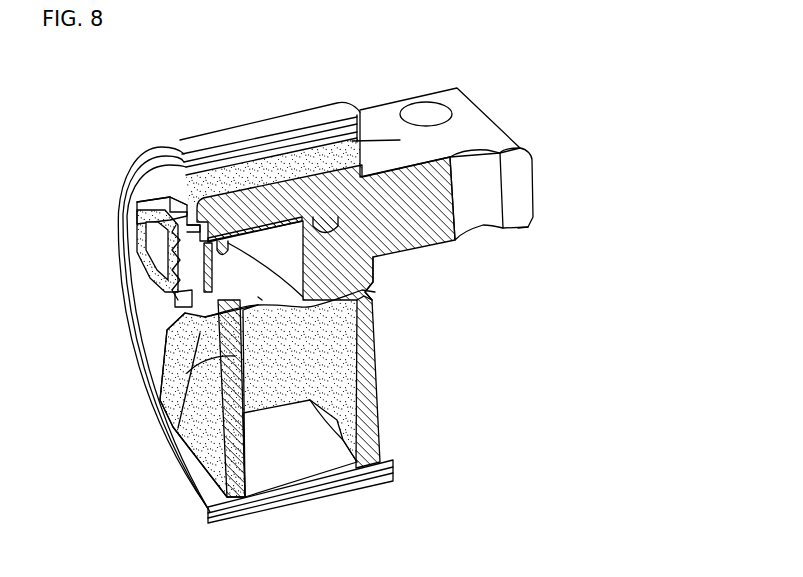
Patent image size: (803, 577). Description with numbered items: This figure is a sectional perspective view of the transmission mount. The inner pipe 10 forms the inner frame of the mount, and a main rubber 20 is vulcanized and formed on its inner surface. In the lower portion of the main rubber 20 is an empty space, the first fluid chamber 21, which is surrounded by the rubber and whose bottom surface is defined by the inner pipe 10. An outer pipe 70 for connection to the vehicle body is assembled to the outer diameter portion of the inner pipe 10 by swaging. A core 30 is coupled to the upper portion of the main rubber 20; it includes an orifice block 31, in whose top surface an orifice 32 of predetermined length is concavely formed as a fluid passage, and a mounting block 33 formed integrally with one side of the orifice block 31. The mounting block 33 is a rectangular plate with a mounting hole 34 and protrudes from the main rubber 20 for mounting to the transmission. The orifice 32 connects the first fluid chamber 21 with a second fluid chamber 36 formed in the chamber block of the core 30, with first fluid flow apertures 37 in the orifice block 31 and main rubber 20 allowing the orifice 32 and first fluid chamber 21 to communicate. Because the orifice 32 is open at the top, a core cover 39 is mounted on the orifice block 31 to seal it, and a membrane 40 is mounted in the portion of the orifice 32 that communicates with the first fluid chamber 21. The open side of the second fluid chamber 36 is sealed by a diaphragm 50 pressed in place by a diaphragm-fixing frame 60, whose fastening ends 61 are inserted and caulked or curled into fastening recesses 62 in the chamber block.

The inner pipe 10 is at (292, 466).
The main rubber 20 is at (371, 341).
The first fluid chamber 21 is at (305, 392).
The core 30 is at (348, 196).
The orifice block 31 is at (377, 275).
The orifice 32 is at (364, 304).
The mounting block 33 is at (160, 197).
The mounting hole 34 is at (482, 182).
The second fluid chamber 36 is at (258, 297).
The first fluid flow apertures 37 is at (187, 373).
The core cover 39 is at (288, 217).
The membrane 40 is at (253, 220).
The diaphragm 50 is at (160, 248).
The diaphragm-fixing frame 60 is at (150, 282).
The fastening ends 61 is at (145, 221).
The fastening recesses 62 is at (181, 178).
The outer pipe 70 is at (370, 481).